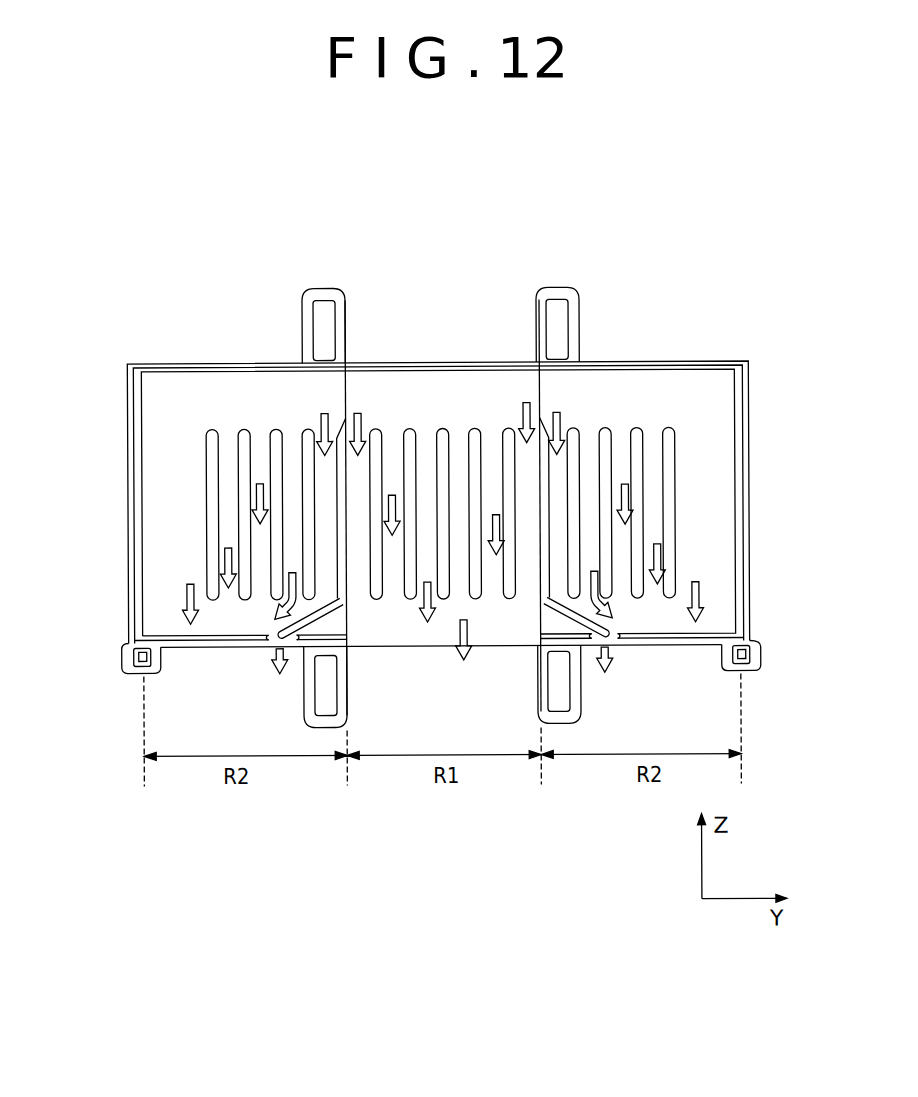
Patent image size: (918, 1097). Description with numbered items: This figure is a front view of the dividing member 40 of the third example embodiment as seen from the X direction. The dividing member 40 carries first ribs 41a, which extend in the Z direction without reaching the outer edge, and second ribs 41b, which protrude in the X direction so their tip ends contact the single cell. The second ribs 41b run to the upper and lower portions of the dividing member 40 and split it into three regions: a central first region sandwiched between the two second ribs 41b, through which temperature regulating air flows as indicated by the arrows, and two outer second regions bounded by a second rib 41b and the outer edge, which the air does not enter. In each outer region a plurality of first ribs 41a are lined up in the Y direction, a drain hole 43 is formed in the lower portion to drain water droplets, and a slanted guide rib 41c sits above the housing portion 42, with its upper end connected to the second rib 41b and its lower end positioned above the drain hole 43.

The dividing member 40 is at (163, 341).
The first ribs 41a is at (212, 460).
The second ribs 41b is at (347, 392).
The guide rib 41c is at (338, 607).
The housing portion 42 is at (305, 310).
The drain hole 43 is at (274, 655).